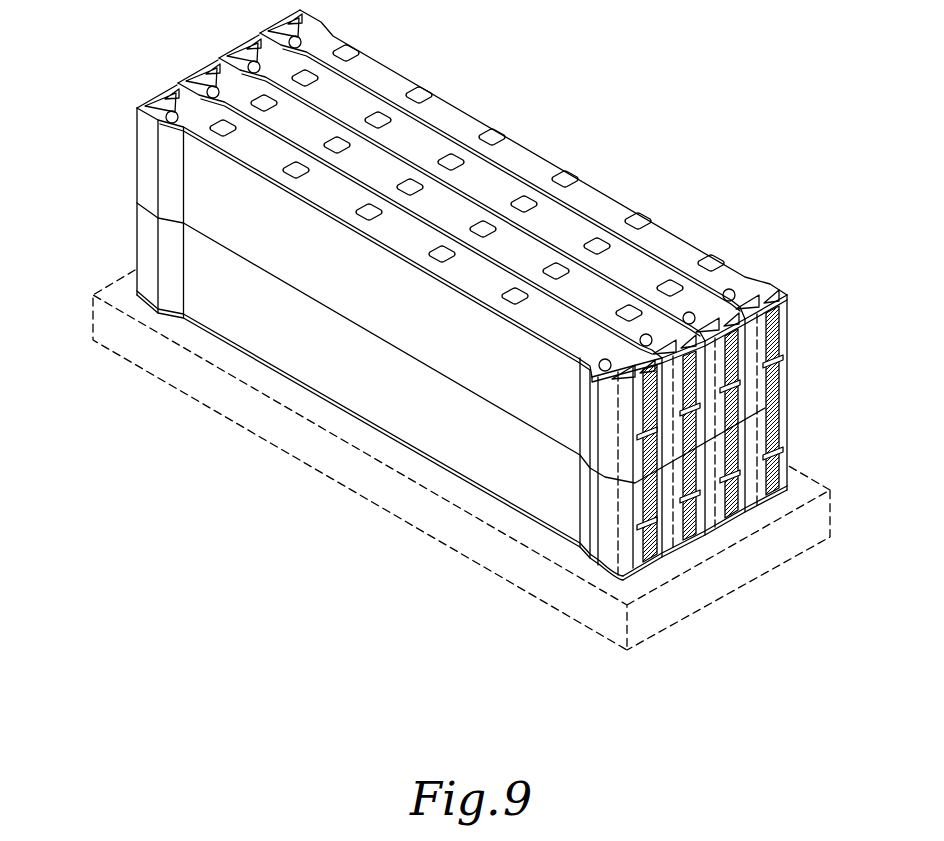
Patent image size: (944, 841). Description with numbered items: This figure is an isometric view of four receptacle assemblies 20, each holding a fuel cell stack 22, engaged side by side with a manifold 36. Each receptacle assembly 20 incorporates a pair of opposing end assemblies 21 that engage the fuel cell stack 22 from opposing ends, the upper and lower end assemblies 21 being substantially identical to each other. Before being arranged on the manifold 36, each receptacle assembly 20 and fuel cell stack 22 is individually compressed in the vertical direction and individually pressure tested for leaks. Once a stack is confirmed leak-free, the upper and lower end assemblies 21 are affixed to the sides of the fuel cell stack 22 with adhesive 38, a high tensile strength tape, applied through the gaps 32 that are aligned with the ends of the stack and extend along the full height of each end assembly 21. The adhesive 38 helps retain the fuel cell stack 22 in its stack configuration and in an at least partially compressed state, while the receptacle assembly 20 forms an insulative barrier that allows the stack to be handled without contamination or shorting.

The receptacle assembly 20 is at (149, 98).
The end assembly 21 is at (127, 168).
The fuel cell stack 22 is at (774, 421).
The gap 32 is at (780, 461).
The manifold 36 is at (90, 327).
The adhesive 38 is at (779, 360).